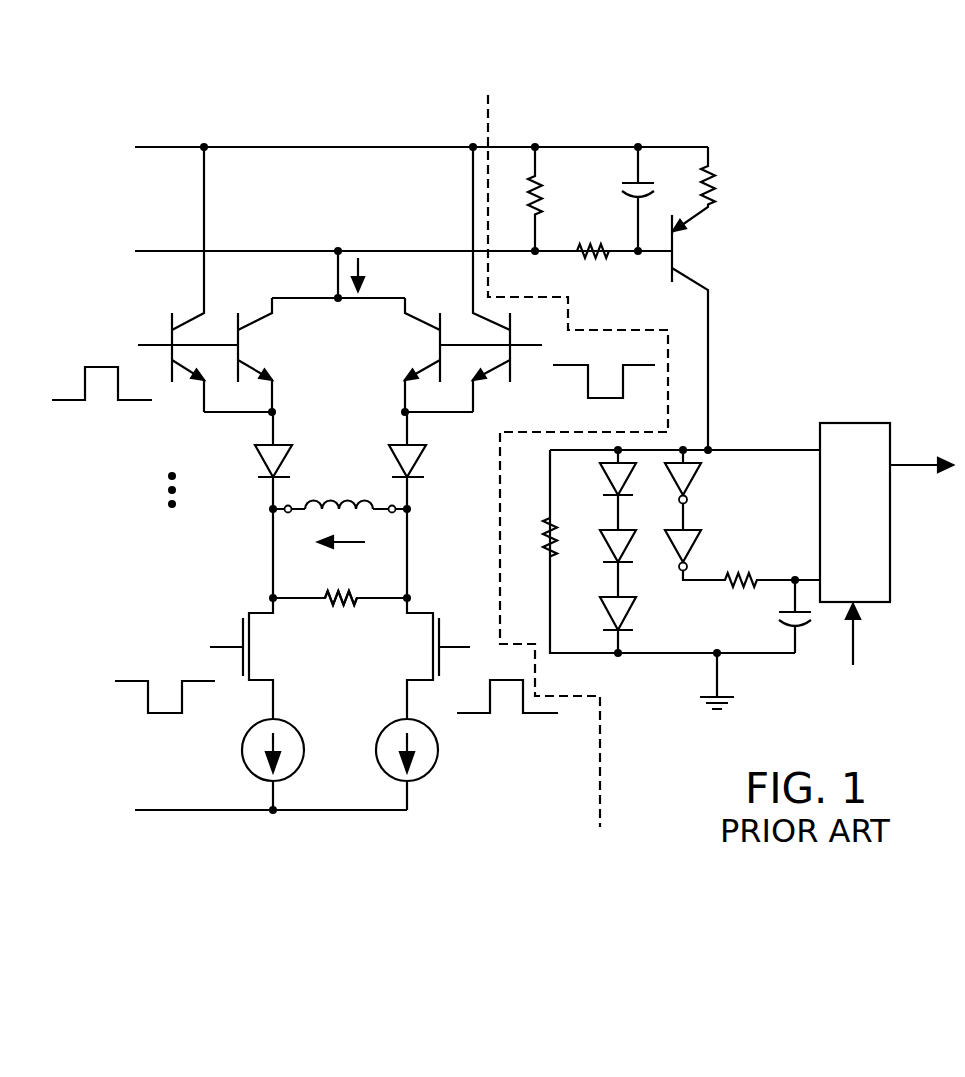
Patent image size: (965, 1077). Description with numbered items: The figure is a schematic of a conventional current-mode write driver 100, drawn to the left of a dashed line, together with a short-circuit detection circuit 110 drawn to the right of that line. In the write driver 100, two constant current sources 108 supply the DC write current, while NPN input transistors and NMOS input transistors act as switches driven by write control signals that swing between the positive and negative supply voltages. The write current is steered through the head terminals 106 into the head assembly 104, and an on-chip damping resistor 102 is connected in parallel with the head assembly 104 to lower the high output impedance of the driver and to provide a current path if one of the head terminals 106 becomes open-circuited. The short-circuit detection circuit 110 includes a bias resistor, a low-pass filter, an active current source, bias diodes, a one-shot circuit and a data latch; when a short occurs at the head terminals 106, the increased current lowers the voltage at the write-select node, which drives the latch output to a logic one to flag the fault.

The write driver 100 is at (322, 146).
The short-circuit detection circuit 110 is at (660, 146).
The head assembly 104 is at (334, 470).
The head terminals 106 is at (282, 502).
The damping resistor 102 is at (333, 640).
The constant current sources 108 is at (285, 718).